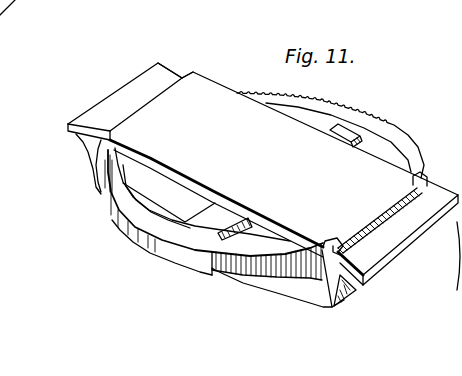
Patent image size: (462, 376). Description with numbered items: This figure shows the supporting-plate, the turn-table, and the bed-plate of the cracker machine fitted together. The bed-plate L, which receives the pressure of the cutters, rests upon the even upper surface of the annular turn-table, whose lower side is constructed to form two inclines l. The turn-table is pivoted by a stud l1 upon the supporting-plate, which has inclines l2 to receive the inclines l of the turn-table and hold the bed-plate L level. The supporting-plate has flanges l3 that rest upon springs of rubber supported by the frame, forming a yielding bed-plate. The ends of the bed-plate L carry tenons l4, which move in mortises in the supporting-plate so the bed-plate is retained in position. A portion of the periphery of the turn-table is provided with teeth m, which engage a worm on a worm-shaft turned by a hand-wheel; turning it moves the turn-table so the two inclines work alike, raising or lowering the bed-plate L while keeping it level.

The bed-plate L is at (284, 178).
The inclines l is at (148, 254).
The stud l1 is at (110, 218).
The inclines l2 is at (235, 278).
The flanges l3 is at (118, 92).
The tenons l4 is at (148, 100).
The teeth m is at (321, 100).